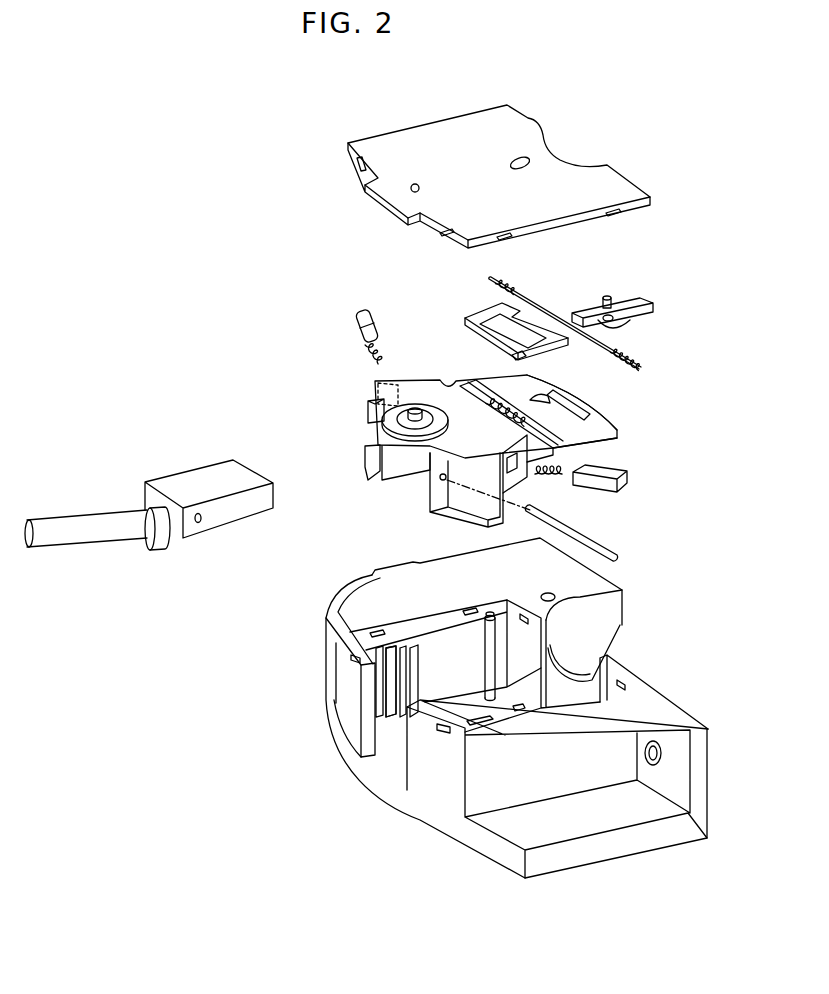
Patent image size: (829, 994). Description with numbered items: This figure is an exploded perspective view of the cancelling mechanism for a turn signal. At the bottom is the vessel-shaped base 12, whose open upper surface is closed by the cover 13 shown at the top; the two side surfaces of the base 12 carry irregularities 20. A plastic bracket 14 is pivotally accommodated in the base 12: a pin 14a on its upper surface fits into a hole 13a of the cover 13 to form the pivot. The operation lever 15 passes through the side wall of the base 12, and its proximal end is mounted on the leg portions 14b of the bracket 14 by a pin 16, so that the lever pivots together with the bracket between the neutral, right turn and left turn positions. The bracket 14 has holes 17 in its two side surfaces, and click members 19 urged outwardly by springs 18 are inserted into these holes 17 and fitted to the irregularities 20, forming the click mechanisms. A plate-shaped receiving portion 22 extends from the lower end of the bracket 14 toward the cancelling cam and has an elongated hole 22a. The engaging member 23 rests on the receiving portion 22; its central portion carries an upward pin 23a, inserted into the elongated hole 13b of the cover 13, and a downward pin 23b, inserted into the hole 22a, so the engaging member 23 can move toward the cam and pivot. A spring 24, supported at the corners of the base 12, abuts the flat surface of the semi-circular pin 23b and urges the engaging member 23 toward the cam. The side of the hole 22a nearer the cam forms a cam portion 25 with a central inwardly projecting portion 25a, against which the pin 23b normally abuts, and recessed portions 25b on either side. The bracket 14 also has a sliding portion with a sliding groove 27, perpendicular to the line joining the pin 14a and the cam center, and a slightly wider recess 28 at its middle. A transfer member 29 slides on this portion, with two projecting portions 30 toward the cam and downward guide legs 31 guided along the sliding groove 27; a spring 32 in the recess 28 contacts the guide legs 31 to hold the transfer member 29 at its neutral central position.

The base 12 is at (483, 768).
The cover 13 is at (425, 135).
The hole 13a is at (415, 191).
The elongated hole 13b is at (530, 159).
The bracket 14 is at (368, 428).
The pin 14a is at (368, 401).
The leg portions 14b is at (400, 486).
The operation lever 15 is at (120, 539).
The pin 16 is at (592, 538).
The holes 17 is at (398, 383).
The springs 18 is at (381, 357).
The click members 19 is at (357, 323).
The irregularities 20 is at (393, 688).
The receiving portion 22 is at (617, 428).
The elongated hole 22a is at (612, 437).
The engaging member 23 is at (648, 296).
The pin 23a is at (607, 296).
The pin 23b is at (628, 326).
The spring 24 is at (508, 285).
The cam portion 25 is at (527, 424).
The projecting portion 25a is at (552, 398).
The recessed portions 25b is at (570, 392).
The sliding groove 27 is at (460, 385).
The recess 28 is at (478, 388).
The transfer member 29 is at (492, 326).
The projecting portions 30 is at (498, 288).
The guide legs 31 is at (516, 358).
The spring 32 is at (448, 421).